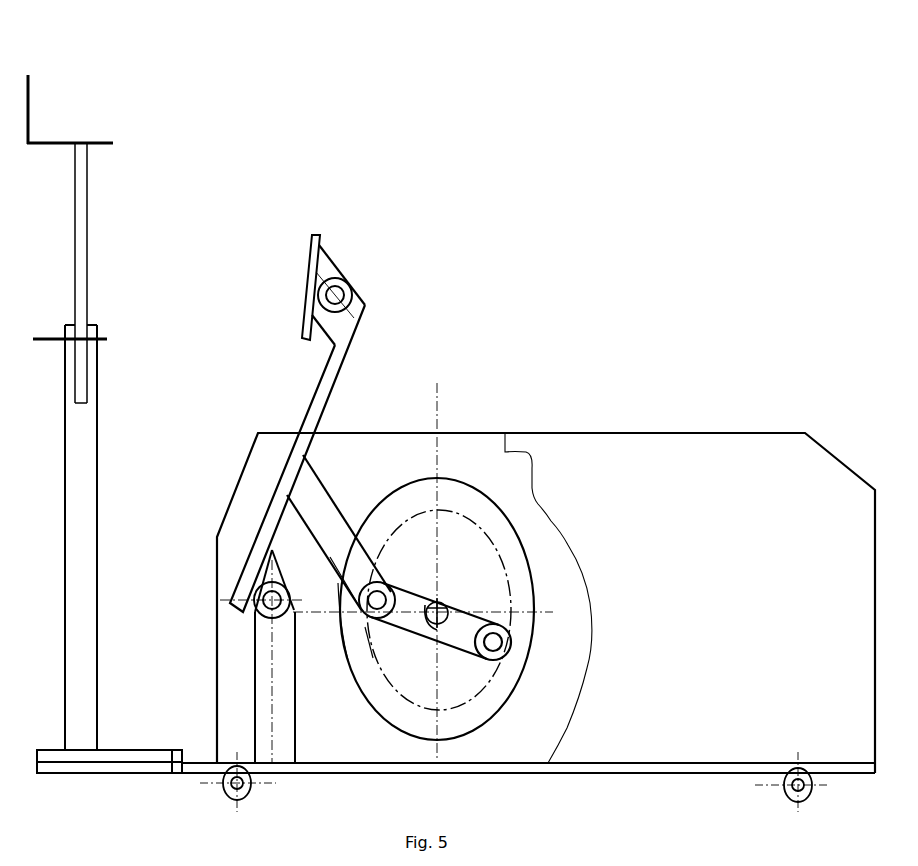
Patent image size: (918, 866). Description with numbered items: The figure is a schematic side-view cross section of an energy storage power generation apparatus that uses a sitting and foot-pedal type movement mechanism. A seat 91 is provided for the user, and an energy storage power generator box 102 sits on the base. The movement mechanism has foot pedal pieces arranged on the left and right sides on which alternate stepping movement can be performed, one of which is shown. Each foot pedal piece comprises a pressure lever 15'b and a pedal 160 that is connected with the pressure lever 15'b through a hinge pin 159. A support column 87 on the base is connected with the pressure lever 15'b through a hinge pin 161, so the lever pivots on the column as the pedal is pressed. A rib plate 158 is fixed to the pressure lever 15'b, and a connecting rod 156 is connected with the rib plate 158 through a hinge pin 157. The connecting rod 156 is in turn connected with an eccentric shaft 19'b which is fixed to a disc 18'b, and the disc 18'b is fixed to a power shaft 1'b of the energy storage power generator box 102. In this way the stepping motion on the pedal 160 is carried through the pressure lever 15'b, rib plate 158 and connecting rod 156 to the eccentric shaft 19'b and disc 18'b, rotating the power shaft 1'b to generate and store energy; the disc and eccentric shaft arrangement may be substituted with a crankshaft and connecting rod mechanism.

The seat 91 is at (82, 143).
The hinge pin 161 is at (263, 560).
The pressure lever 15'b is at (289, 316).
The pedal 160 is at (310, 268).
The hinge pin 159 is at (330, 280).
The rib plate 158 is at (343, 540).
The hinge pin 157 is at (380, 578).
The power shaft 1'b is at (480, 326).
The disc 18'b is at (486, 366).
The connecting rod 156 is at (473, 623).
The eccentric shaft 19'b is at (520, 391).
The energy storage power generator box 102 is at (699, 462).
The support column 87 is at (267, 717).